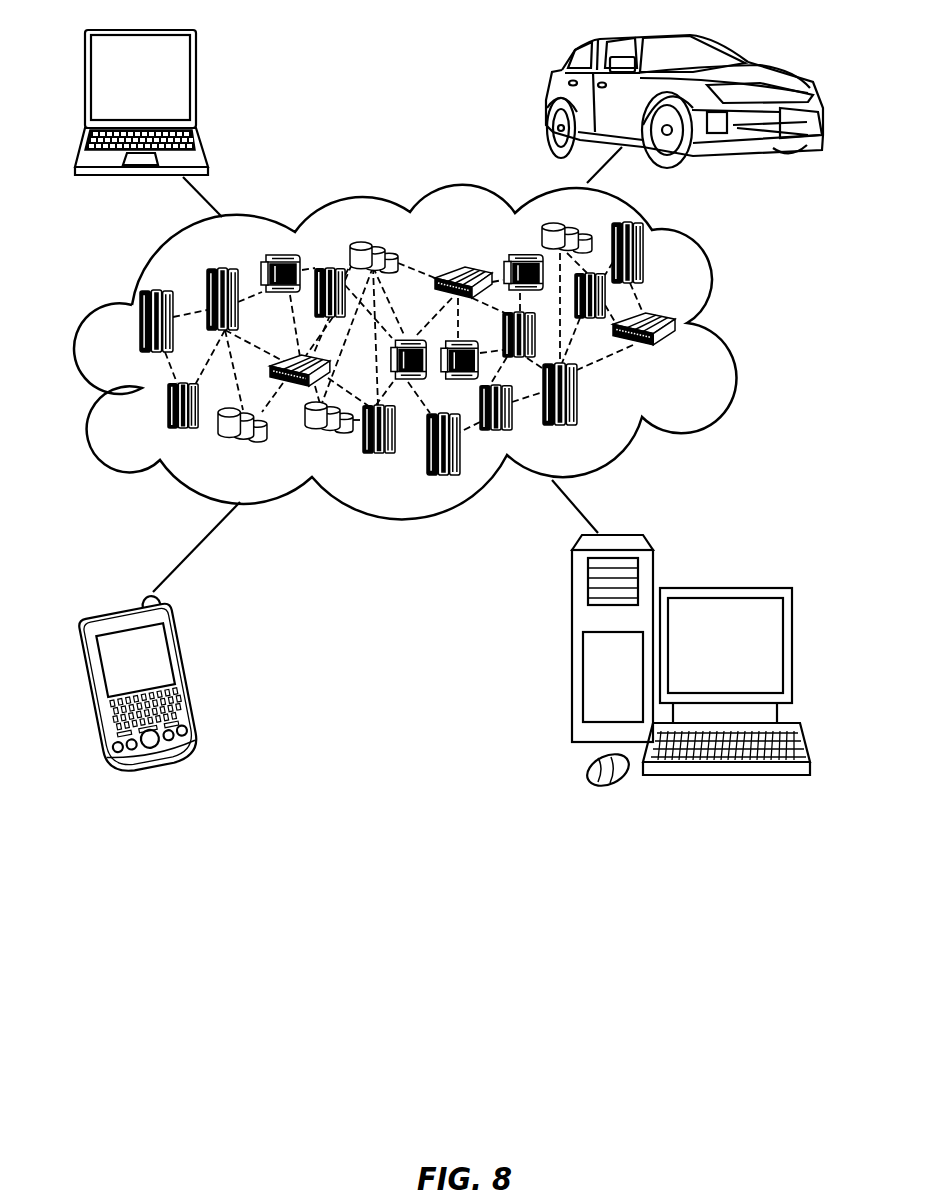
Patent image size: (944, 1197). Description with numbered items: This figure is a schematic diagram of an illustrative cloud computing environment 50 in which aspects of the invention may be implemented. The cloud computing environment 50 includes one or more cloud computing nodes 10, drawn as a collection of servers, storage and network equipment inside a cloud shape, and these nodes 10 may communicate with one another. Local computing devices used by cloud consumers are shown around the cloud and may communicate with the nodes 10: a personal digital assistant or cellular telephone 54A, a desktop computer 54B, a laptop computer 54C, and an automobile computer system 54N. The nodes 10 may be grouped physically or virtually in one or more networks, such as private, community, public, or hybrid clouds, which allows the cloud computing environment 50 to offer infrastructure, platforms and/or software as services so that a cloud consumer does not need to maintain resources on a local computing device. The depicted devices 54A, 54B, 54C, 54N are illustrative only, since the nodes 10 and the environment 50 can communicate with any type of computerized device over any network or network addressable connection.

The cloud computing environment 50 is at (725, 329).
The cloud computing node 10 is at (689, 364).
The personal digital assistant or cellular telephone 54A is at (188, 673).
The desktop computer 54B is at (723, 588).
The laptop computer 54C is at (197, 83).
The automobile computer system 54N is at (548, 98).